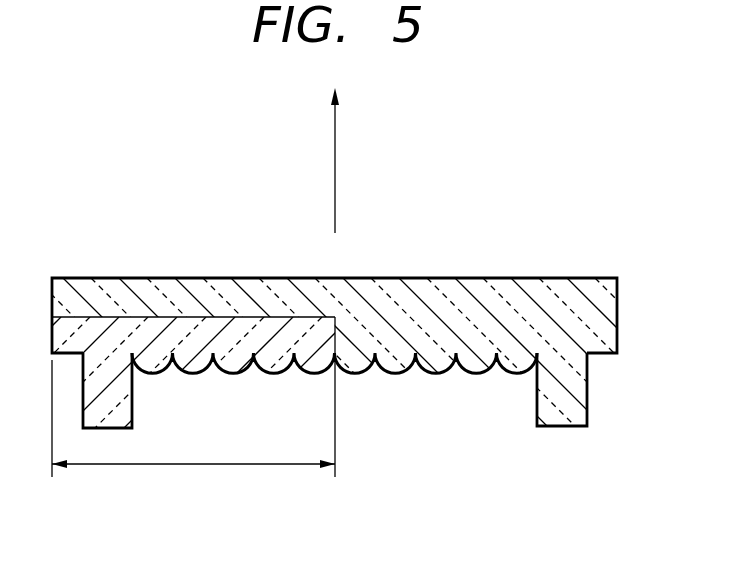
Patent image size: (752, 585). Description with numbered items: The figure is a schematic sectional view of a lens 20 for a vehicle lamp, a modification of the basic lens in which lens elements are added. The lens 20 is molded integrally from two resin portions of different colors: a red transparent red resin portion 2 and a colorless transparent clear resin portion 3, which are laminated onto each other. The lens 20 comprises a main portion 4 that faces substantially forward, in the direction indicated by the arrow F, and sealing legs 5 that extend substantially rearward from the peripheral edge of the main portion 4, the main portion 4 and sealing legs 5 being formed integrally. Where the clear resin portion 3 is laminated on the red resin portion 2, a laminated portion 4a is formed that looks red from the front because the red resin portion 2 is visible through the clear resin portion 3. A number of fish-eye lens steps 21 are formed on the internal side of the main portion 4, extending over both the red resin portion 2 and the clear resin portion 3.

The lens 20 is at (512, 140).
The red resin portion 2 is at (103, 320).
The clear resin portion 3 is at (400, 277).
The main portion 4 is at (240, 278).
The laminated portion 4a is at (193, 415).
The sealing legs 5 is at (90, 400).
The fish-eye lens steps 21 is at (150, 360).
The forward direction arrow F is at (344, 160).